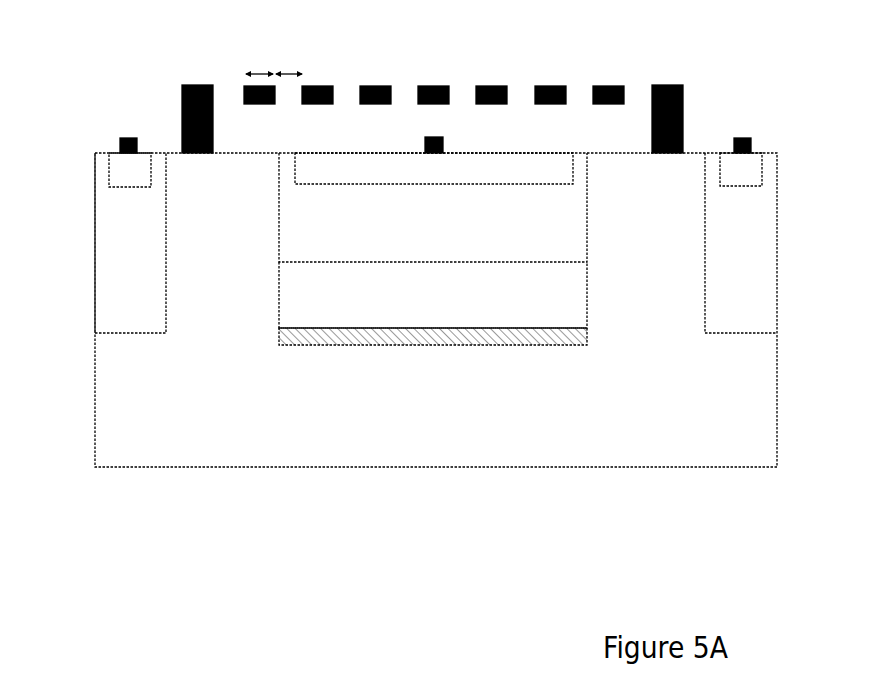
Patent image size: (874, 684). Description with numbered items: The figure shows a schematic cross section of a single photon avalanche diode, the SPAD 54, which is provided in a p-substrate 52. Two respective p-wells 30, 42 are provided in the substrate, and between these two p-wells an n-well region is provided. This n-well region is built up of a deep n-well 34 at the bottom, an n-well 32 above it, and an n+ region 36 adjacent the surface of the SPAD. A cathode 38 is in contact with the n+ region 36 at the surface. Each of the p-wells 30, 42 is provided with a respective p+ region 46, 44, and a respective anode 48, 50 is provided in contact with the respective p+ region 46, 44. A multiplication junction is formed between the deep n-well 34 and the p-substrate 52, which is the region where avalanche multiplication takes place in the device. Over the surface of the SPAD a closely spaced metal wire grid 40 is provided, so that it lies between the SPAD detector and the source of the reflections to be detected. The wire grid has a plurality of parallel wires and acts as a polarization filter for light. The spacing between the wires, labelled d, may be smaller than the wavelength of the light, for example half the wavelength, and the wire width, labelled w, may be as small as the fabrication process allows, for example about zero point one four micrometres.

The p-well 30 is at (130, 243).
The n-well 32 is at (433, 207).
The deep n-well 34 is at (433, 295).
The n+ region 36 is at (434, 168).
The cathode 38 is at (438, 135).
The metal wire grid 40 is at (577, 97).
The p-well 42 is at (741, 243).
The p+ region 44 is at (755, 172).
The p+ region 46 is at (110, 170).
The anode 48 is at (120, 146).
The anode 50 is at (752, 148).
The p-substrate 52 is at (433, 361).
The SPAD 54 is at (745, 447).